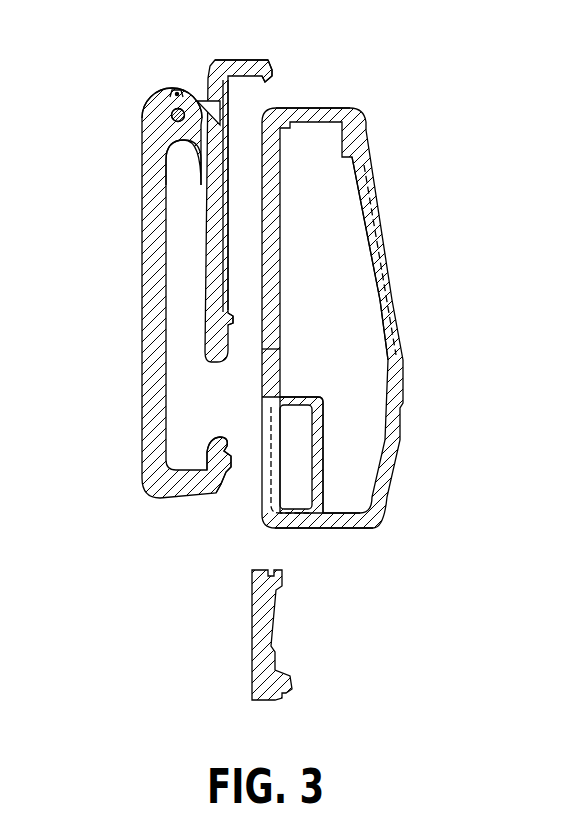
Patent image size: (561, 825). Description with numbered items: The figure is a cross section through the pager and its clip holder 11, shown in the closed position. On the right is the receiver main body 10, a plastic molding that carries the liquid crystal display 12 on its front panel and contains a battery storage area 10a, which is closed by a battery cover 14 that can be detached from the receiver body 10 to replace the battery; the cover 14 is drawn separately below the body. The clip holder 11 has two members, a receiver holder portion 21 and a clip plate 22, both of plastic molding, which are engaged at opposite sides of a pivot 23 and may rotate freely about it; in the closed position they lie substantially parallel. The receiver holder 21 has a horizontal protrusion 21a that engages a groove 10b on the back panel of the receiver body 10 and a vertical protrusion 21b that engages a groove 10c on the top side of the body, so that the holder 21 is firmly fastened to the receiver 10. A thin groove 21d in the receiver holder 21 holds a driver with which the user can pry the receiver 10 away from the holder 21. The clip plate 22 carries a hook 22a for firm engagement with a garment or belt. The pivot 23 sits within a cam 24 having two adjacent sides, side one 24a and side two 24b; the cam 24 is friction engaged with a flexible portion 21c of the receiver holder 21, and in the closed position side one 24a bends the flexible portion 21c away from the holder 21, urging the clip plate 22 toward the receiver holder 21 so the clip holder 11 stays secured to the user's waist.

The receiver main body 10 is at (403, 465).
The battery storage area 10a is at (305, 487).
The groove 10b is at (264, 350).
The groove 10c is at (310, 107).
The clip holder 11 is at (157, 65).
The liquid crystal display 12 is at (392, 278).
The battery cover 14 is at (278, 702).
The receiver holder portion 21 is at (210, 280).
The horizontal protrusion 21a is at (232, 322).
The vertical protrusion 21b is at (275, 84).
The flexible portion 21c is at (231, 99).
The thin groove 21d is at (224, 62).
The clip plate 22 is at (142, 383).
The hook 22a is at (228, 437).
The pivot 23 is at (172, 112).
The cam 24 is at (143, 168).
The cam side one 24a is at (198, 106).
The cam side two 24b is at (173, 93).